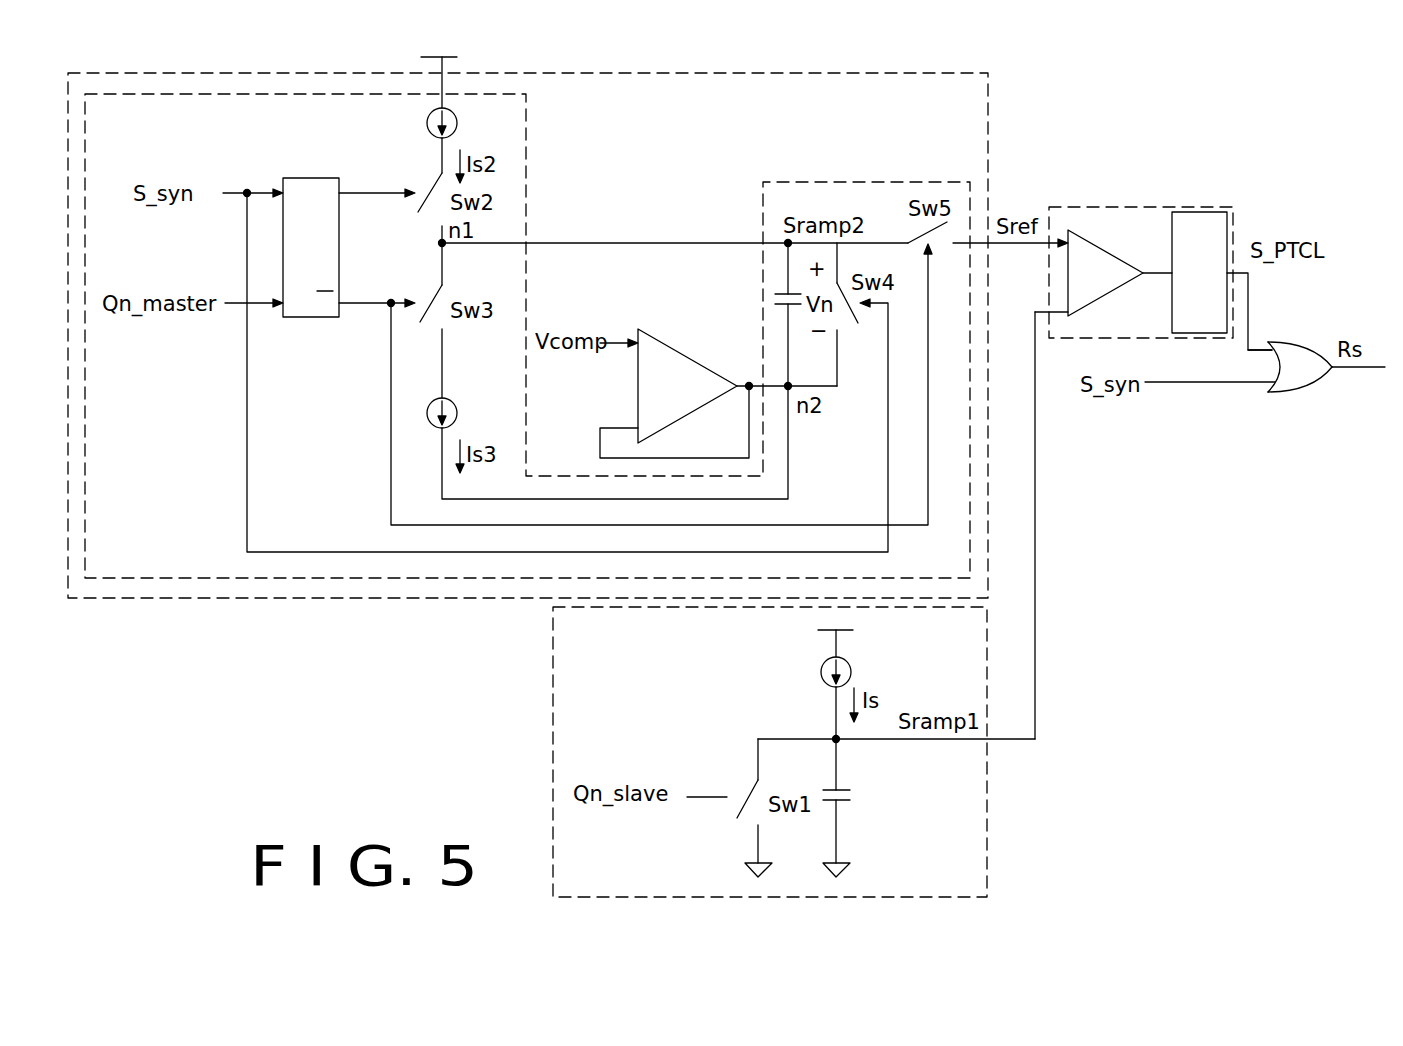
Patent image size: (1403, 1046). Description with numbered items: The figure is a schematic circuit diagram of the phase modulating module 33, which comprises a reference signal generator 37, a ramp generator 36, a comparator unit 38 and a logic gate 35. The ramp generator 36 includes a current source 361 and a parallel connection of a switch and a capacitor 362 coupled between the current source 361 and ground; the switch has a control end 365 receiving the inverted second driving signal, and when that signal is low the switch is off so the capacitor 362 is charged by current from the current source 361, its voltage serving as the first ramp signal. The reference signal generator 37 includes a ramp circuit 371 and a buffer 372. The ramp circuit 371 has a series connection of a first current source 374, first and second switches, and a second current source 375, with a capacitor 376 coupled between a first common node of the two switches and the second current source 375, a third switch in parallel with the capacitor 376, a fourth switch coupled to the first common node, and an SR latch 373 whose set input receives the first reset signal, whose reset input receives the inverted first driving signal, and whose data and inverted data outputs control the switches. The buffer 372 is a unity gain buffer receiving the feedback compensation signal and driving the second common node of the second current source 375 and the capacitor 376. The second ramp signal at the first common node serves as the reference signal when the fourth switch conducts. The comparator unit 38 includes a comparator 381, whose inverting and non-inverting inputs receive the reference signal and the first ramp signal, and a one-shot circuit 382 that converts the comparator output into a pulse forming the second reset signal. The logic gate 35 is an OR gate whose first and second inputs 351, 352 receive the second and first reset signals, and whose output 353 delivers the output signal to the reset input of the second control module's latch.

The phase modulating module 33 is at (1364, 77).
The logic gate 35 is at (1287, 388).
The first input 351 is at (1257, 347).
The second input 352 is at (1257, 382).
The output 353 is at (1358, 363).
The ramp generator 36 is at (987, 808).
The current source 361 is at (848, 665).
The capacitor 362 is at (843, 801).
The control end 365 is at (708, 797).
The reference signal generator 37 is at (988, 107).
The ramp circuit 371 is at (864, 179).
The buffer 372 is at (688, 352).
The SR latch 373 is at (308, 178).
The first current source 374 is at (427, 118).
The second current source 375 is at (460, 412).
The capacitor 376 is at (773, 300).
The comparator unit 38 is at (1227, 203).
The comparator 381 is at (1115, 253).
The one-shot circuit 382 is at (1183, 210).